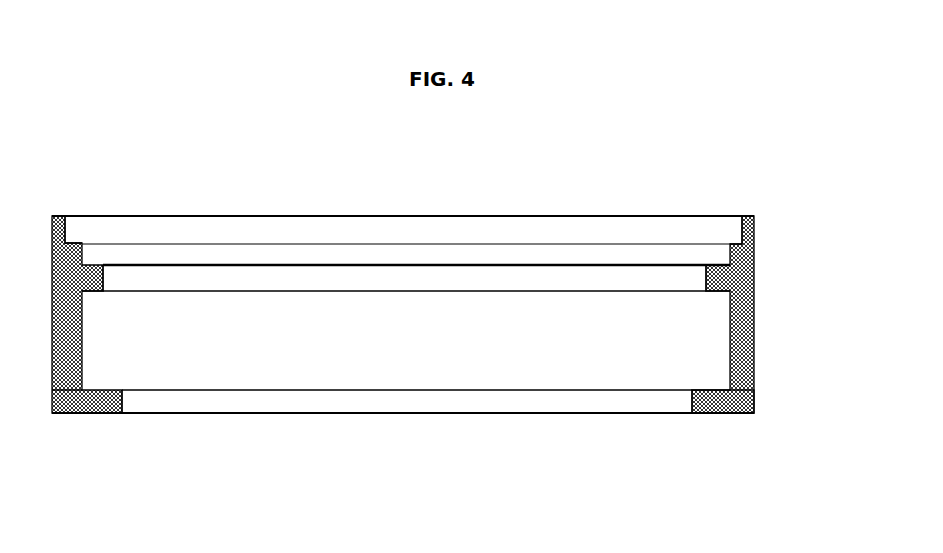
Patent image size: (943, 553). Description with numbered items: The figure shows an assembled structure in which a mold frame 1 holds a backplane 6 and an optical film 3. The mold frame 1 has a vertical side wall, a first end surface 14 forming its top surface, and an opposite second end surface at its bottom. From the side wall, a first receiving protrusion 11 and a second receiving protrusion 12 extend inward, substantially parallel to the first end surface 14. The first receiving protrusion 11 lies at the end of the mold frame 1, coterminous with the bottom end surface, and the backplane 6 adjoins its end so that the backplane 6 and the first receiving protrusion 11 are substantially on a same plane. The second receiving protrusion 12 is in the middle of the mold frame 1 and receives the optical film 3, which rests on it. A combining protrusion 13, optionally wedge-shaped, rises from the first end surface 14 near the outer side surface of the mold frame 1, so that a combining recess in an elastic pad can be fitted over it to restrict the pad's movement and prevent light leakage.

The mold frame 1 is at (743, 307).
The first receiving protrusion 11 is at (700, 402).
The second receiving protrusion 12 is at (103, 267).
The combining protrusion 13 is at (60, 217).
The first end surface 14 is at (67, 243).
The optical film 3 is at (420, 250).
The backplane 6 is at (267, 400).